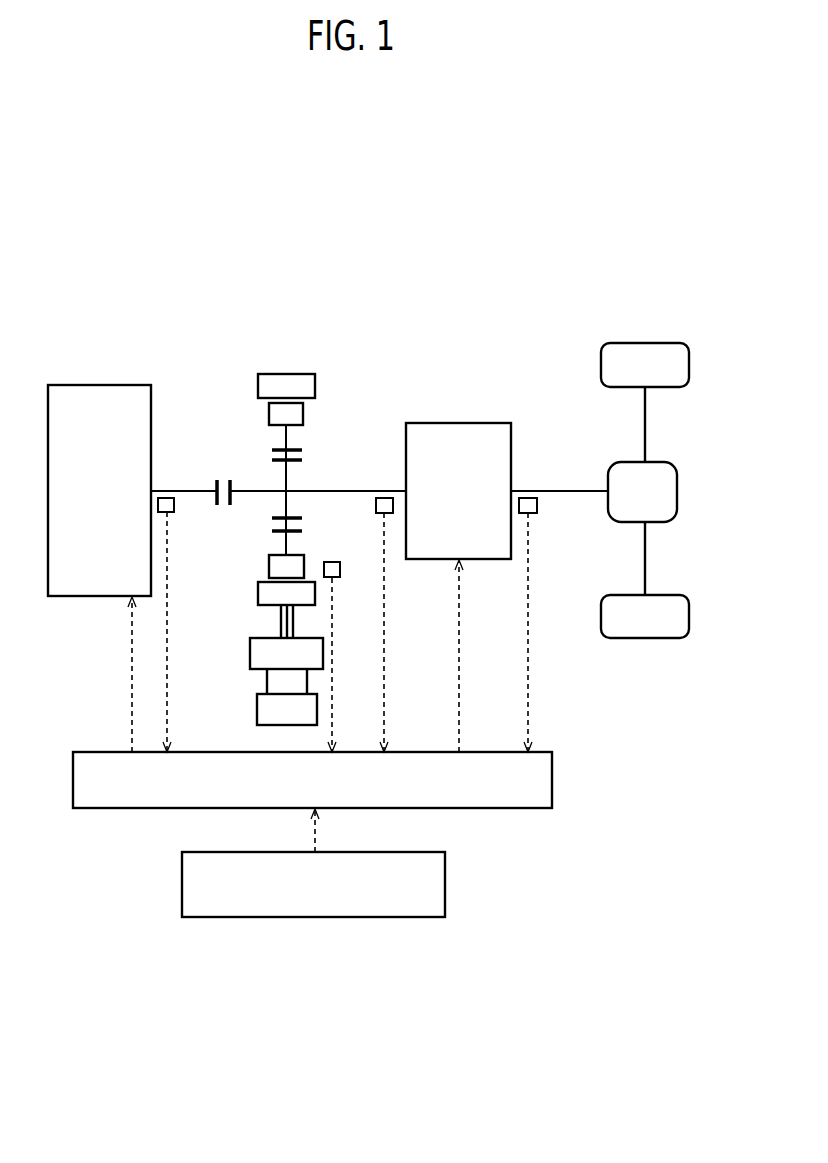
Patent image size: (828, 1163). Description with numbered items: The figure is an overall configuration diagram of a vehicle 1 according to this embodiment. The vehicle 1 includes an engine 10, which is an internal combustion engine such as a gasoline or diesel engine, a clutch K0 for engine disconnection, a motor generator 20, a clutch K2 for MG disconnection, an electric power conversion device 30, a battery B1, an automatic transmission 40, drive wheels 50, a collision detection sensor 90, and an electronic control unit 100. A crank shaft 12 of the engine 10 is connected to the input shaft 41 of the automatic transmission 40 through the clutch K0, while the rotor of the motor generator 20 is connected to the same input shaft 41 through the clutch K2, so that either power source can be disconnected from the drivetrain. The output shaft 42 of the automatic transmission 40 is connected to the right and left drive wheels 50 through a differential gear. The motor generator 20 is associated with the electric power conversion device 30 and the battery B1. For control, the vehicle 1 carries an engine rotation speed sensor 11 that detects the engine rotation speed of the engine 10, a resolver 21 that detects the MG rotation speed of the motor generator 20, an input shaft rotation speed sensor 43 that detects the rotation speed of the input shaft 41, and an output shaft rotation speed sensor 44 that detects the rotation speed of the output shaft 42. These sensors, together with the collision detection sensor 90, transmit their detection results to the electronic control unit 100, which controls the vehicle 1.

The vehicle 1 is at (365, 238).
The engine 10 is at (102, 385).
The engine rotation speed sensor 11 is at (174, 505).
The crank shaft 12 is at (197, 488).
The clutch K0 is at (223, 470).
The motor generator 20 is at (285, 336).
The resolver 21 is at (340, 570).
The clutch K2 is at (272, 522).
The electric power conversion device 30 is at (250, 656).
The battery B1 is at (257, 713).
The automatic transmission 40 is at (463, 423).
The input shaft 41 is at (347, 488).
The output shaft 42 is at (573, 490).
The input shaft rotation speed sensor 43 is at (376, 505).
The output shaft rotation speed sensor 44 is at (537, 505).
The drive wheels 50 is at (645, 342).
The collision detection sensor 90 is at (311, 917).
The electronic control unit 100 is at (552, 780).